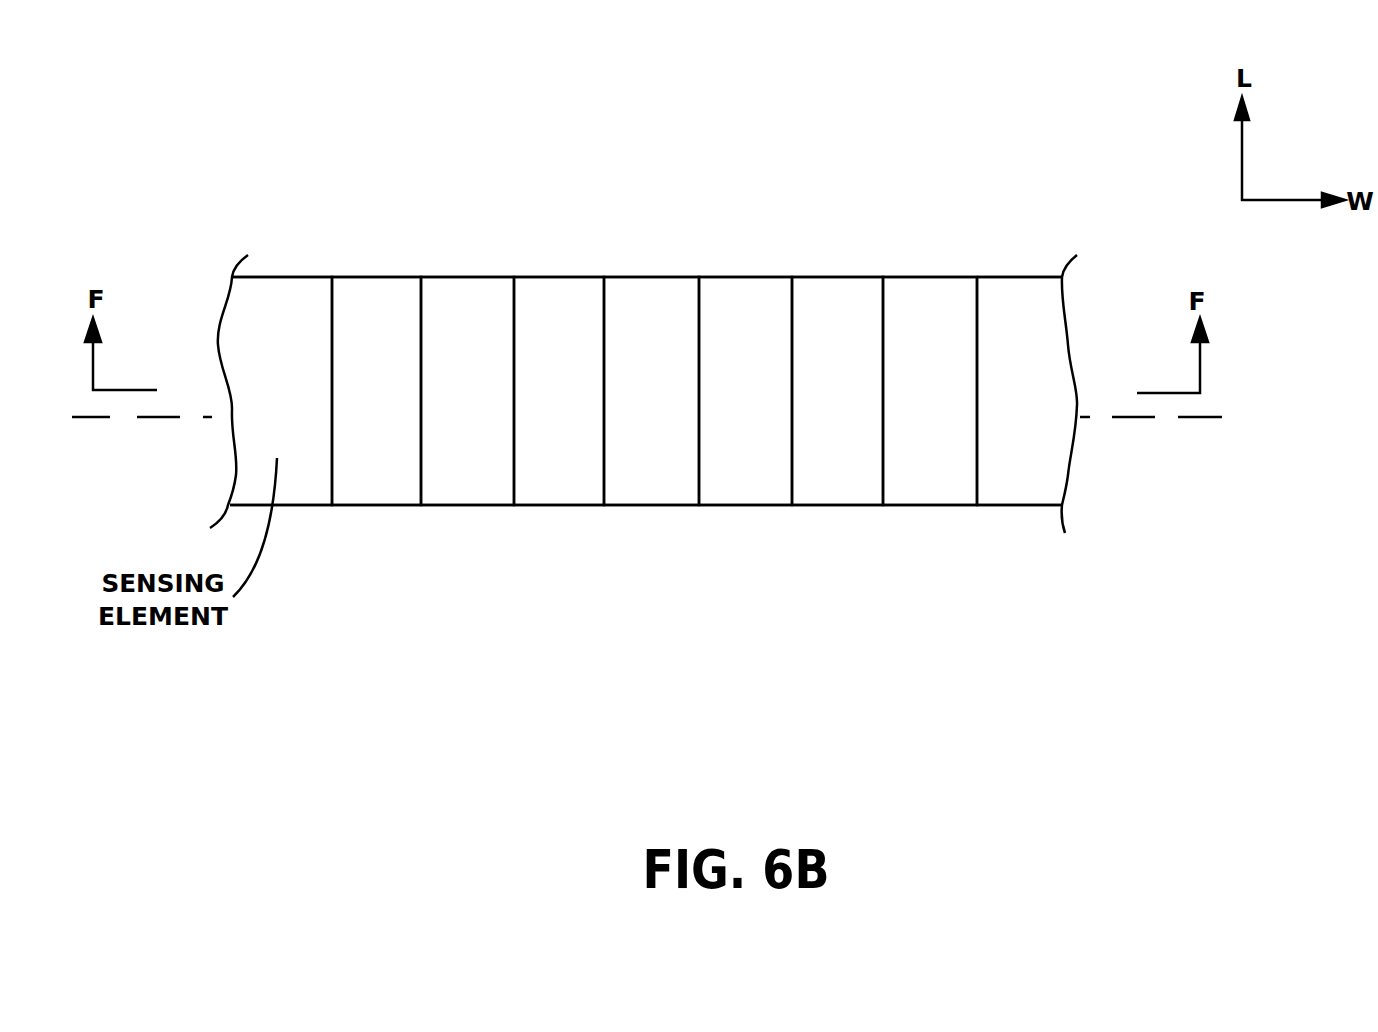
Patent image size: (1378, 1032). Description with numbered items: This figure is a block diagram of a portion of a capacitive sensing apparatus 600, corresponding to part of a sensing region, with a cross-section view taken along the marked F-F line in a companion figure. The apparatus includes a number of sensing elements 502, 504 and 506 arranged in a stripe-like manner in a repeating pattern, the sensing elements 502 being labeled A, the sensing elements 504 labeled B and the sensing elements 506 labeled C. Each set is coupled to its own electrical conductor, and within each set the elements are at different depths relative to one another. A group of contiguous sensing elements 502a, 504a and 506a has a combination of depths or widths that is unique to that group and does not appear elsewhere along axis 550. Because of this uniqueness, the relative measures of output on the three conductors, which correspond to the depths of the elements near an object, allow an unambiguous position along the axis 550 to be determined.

The capacitive sensing apparatus 600 is at (219, 178).
The sensing elements 502 is at (255, 417).
The sensing elements 504 is at (352, 417).
The sensing elements 506 is at (443, 417).
The sensing element 502a is at (550, 463).
The sensing element 504a is at (648, 463).
The sensing element 506a is at (748, 463).
The axis 550 is at (1128, 424).